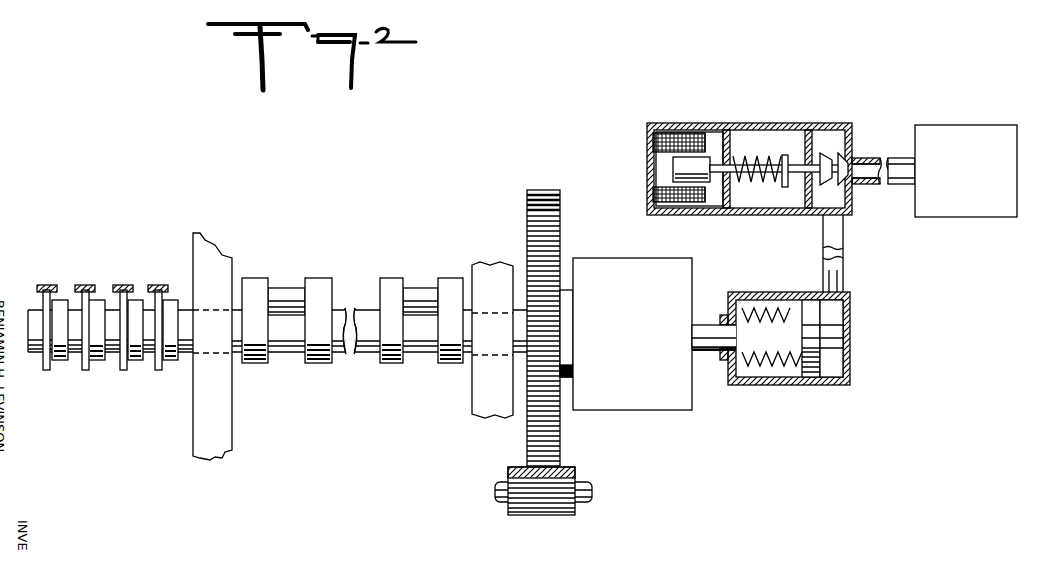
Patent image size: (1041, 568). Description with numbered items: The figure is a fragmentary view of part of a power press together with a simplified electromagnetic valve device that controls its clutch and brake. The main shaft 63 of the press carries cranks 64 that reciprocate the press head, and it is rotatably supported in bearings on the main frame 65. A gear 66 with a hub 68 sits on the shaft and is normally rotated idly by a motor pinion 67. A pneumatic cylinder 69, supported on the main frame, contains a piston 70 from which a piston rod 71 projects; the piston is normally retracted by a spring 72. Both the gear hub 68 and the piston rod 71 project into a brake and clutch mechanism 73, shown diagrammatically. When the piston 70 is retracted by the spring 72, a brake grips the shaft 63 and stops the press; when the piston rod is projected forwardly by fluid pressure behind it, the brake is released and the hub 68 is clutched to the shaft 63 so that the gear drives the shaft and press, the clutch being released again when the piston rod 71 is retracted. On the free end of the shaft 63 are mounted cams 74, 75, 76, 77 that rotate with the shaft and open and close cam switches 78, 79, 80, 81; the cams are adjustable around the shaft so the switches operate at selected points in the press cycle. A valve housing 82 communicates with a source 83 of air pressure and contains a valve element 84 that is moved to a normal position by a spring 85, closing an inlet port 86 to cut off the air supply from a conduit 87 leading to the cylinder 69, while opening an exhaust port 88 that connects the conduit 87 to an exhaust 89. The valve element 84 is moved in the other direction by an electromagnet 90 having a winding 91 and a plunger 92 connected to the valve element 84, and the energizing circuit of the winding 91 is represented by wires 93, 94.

The main shaft 63 is at (37, 312).
The cranks 64 is at (287, 292).
The main frame 65 is at (228, 392).
The gear 66 is at (527, 432).
The motor pinion 67 is at (522, 472).
The gear hub 68 is at (569, 375).
The pneumatic cylinder 69 is at (798, 329).
The piston 70 is at (814, 298).
The piston rod 71 is at (698, 350).
The spring 72 is at (752, 293).
The brake and clutch mechanism 73 is at (655, 411).
The cam 74 is at (49, 372).
The cam 75 is at (88, 372).
The cam 76 is at (126, 372).
The cam 77 is at (161, 372).
The cam switch 78 is at (45, 287).
The cam switch 79 is at (85, 287).
The cam switch 80 is at (121, 287).
The cam switch 81 is at (159, 287).
The valve housing 82 is at (736, 168).
The source of air pressure 83 is at (956, 181).
The valve element 84 is at (830, 177).
The spring 85 is at (766, 158).
The inlet port 86 is at (854, 158).
The conduit 87 is at (838, 256).
The exhaust port 88 is at (827, 155).
The exhaust 89 is at (790, 125).
The electromagnet 90 is at (660, 164).
The winding 91 is at (683, 136).
The plunger 92 is at (700, 175).
The wire 93 is at (658, 135).
The wire 94 is at (657, 205).